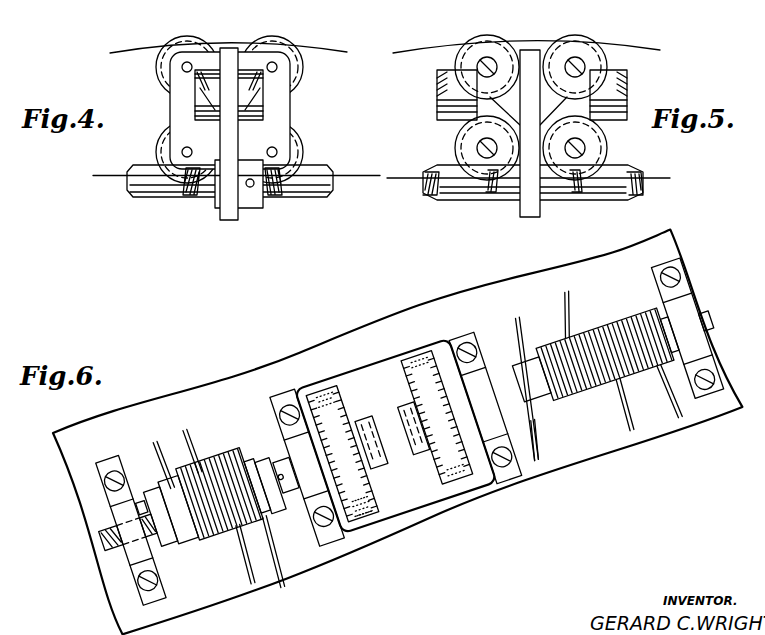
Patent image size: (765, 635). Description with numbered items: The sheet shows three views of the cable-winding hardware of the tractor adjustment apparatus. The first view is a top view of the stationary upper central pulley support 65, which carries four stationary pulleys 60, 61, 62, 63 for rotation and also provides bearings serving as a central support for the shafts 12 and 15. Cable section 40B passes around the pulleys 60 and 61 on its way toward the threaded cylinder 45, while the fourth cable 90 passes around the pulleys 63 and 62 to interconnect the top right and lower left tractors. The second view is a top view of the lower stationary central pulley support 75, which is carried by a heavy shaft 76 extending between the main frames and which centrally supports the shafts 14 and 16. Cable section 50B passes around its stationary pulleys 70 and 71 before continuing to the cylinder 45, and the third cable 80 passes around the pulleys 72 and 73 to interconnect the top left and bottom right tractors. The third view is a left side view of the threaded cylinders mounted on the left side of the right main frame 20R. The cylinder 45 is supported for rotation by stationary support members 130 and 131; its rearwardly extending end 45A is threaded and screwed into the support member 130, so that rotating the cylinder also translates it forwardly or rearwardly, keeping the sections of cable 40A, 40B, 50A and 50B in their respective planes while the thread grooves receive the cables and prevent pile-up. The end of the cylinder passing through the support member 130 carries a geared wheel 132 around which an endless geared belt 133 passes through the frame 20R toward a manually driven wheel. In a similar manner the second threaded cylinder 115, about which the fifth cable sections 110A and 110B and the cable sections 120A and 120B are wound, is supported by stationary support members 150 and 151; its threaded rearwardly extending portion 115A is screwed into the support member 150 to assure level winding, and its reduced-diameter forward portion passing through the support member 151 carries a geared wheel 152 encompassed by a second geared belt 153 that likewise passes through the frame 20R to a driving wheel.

In FIG. 4, the shaft 12 is at (302, 192).
In FIG. 5, the shaft 14 is at (553, 188).
In FIG. 4, the shaft 15 is at (195, 196).
In FIG. 5, the shaft 16 is at (618, 194).
In FIG. 6, the right main frame 20R is at (495, 505).
In FIG. 6, the first section of cable 40 40A is at (517, 318).
In FIG. 4, the second section of cable 40 40B is at (336, 52).
In FIG. 6, the second section of cable 40 40B is at (567, 293).
In FIG. 6, the threaded cylinder 45 is at (590, 332).
In FIG. 6, the rearwardly extending end of cylinder 45 45A is at (532, 454).
In FIG. 6, the first section of cable 50 50A is at (630, 416).
In FIG. 5, the second section of cable 50 50B is at (657, 52).
In FIG. 6, the second section of cable 50 50B is at (673, 411).
In FIG. 4, the stationary pulley 60 is at (156, 151).
In FIG. 4, the stationary pulley 61 is at (180, 36).
In FIG. 4, the stationary pulley 62 is at (276, 36).
In FIG. 4, the stationary pulley 63 is at (300, 163).
In FIG. 4, the stationary upper central pulley support 65 is at (226, 212).
In FIG. 5, the stationary pulley 70 is at (462, 145).
In FIG. 5, the stationary pulley 71 is at (477, 42).
In FIG. 5, the stationary pulley 72 is at (593, 42).
In FIG. 5, the stationary pulley 73 is at (608, 148).
In FIG. 5, the lower stationary central pulley support 75 is at (523, 213).
In FIG. 5, the heavy shaft 76 is at (615, 98).
In FIG. 5, the third cable 80 is at (423, 51).
In FIG. 4, the fourth cable 90 is at (126, 53).
In FIG. 6, the first section of fifth cable 110A is at (156, 448).
In FIG. 6, the second section of fifth cable 110B is at (195, 414).
In FIG. 6, the second threaded cylinder 115 is at (203, 467).
In FIG. 6, the rearwardly extending portion of cylinder 115 115A is at (160, 541).
In FIG. 6, the cable section 120A is at (253, 583).
In FIG. 6, the cable section 120B is at (280, 584).
In FIG. 6, the stationary support member 130 is at (477, 332).
In FIG. 6, the stationary support member 131 is at (662, 264).
In FIG. 6, the geared wheel 132 is at (401, 371).
In FIG. 6, the endless geared belt 133 is at (417, 358).
In FIG. 6, the stationary support member 150 is at (95, 477).
In FIG. 6, the stationary support member 151 is at (272, 443).
In FIG. 6, the geared wheel 152 is at (343, 388).
In FIG. 6, the second geared belt 153 is at (367, 514).